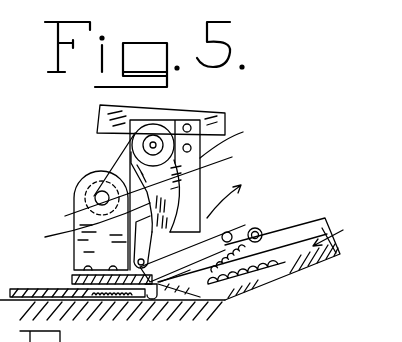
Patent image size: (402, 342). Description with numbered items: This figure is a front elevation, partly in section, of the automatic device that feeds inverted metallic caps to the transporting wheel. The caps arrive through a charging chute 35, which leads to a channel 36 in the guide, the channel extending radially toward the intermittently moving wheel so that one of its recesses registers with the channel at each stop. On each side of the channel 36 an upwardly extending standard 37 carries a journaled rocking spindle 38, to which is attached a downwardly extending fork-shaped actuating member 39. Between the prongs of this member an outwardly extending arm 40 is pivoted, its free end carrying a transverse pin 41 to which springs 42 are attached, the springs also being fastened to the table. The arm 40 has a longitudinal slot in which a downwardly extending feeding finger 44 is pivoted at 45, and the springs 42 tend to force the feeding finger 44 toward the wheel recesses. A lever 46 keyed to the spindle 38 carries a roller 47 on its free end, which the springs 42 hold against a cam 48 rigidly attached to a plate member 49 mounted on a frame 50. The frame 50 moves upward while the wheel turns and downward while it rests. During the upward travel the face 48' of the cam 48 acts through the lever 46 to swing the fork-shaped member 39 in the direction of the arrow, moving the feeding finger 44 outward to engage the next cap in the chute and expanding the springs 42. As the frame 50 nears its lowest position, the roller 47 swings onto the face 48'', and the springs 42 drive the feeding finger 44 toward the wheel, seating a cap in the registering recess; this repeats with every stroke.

The charging chute 35 is at (340, 256).
The channel 36 is at (146, 301).
The standard 37 is at (100, 205).
The rocking spindle 38 is at (101, 196).
The fork-shaped actuating member 39 is at (143, 242).
The arm 40 is at (220, 226).
The transverse pin 41 is at (270, 233).
The springs 42 is at (214, 292).
The feeding finger 44 is at (165, 341).
The pivot 45 is at (259, 229).
The lever 46 is at (135, 166).
The roller 47 is at (90, 212).
The cam 48 is at (157, 182).
The cam face 48' is at (82, 226).
The cam face 48'' is at (235, 138).
The plate member 49 is at (192, 198).
The frame 50 is at (216, 116).